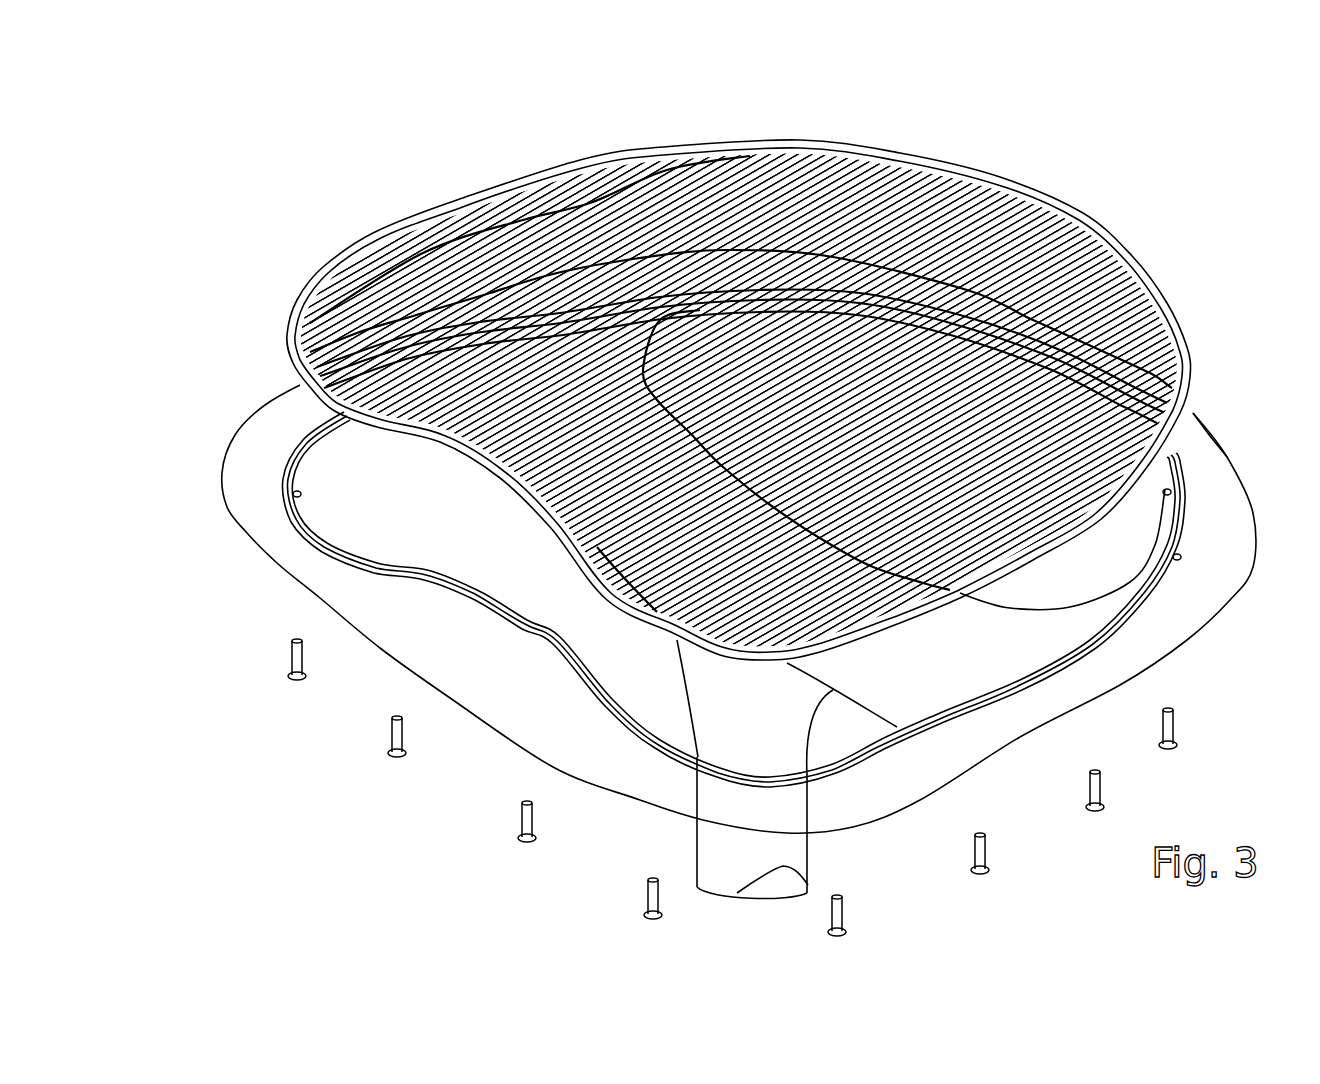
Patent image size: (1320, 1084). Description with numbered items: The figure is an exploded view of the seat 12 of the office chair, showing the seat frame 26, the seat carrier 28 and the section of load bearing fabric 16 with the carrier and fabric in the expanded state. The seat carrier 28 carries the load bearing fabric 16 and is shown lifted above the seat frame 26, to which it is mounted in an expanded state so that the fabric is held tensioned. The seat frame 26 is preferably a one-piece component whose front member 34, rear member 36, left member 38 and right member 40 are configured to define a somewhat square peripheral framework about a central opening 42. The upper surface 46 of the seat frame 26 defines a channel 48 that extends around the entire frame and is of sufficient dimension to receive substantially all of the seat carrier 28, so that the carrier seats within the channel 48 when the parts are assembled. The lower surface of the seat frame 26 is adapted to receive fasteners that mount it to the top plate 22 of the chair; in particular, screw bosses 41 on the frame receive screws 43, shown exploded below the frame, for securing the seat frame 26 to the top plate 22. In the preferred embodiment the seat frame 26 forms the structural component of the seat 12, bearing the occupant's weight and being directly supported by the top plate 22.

The seat 12 is at (1172, 232).
The load bearing fabric 16 is at (872, 240).
The top plate 22 is at (1000, 614).
The seat frame 26 is at (1225, 598).
The seat carrier 28 is at (415, 232).
The front member 34 is at (410, 630).
The rear member 36 is at (1195, 420).
The left member 38 is at (1015, 720).
The right member 40 is at (370, 353).
The screw bosses 41 is at (296, 500).
The central opening 42 is at (392, 553).
The screws 43 is at (290, 680).
The upper surface 46 is at (258, 437).
The channel 48 is at (300, 458).